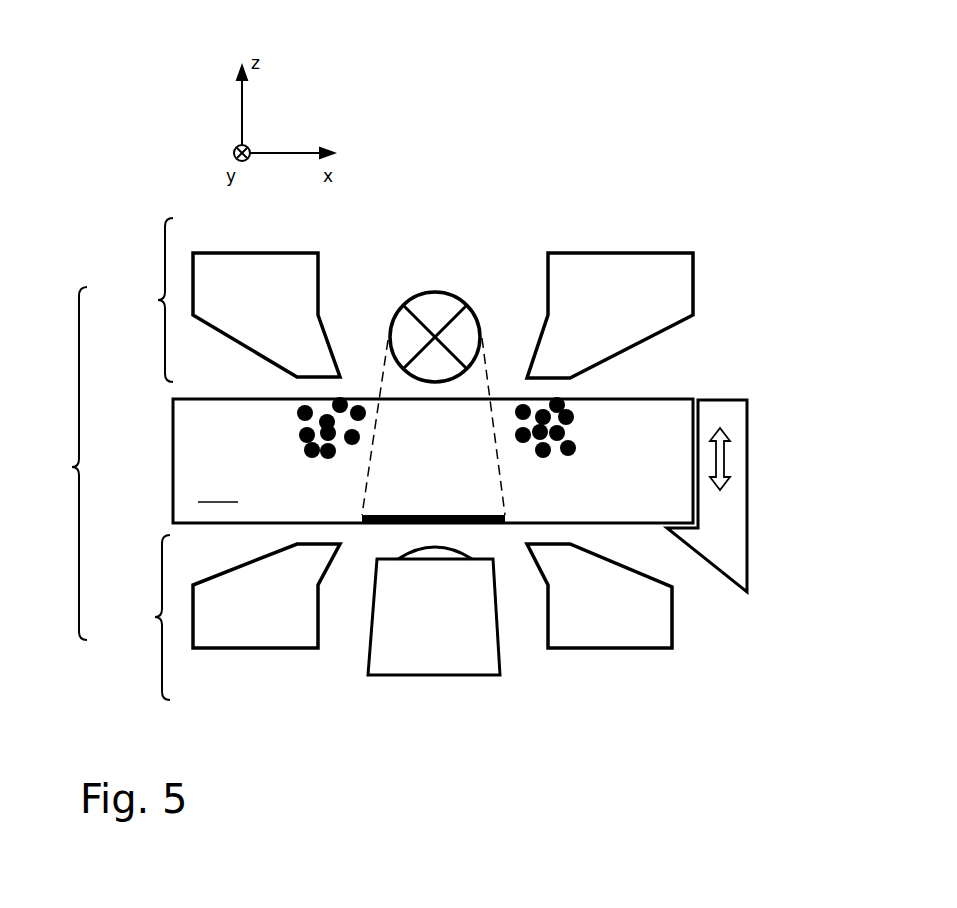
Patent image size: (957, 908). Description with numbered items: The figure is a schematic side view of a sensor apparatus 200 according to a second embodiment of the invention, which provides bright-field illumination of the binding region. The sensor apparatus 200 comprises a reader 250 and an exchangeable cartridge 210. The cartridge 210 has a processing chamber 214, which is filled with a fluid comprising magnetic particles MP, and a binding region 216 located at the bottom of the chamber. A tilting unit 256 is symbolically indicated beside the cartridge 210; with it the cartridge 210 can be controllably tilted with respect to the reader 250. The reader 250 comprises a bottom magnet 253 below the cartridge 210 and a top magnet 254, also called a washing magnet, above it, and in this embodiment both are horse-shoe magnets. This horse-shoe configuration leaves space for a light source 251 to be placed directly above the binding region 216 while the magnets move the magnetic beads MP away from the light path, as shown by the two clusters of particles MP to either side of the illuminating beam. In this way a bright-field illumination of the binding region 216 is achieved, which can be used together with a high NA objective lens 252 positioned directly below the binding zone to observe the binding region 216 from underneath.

The sensor apparatus 200 is at (540, 127).
The exchangeable cartridge 210 is at (173, 440).
The processing chamber 214 is at (218, 491).
The binding region 216 is at (440, 515).
The reader 250 is at (97, 459).
The light source 251 is at (425, 308).
The high NA objective lens 252 is at (457, 624).
The bottom magnet 253 is at (620, 648).
The top magnet 254 is at (627, 255).
The tilting unit 256 is at (732, 505).
The magnetic particles MP is at (460, 429).